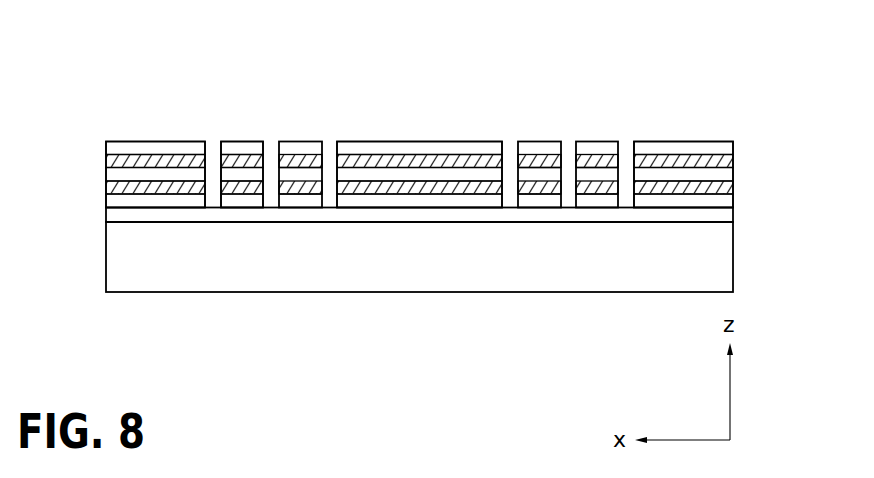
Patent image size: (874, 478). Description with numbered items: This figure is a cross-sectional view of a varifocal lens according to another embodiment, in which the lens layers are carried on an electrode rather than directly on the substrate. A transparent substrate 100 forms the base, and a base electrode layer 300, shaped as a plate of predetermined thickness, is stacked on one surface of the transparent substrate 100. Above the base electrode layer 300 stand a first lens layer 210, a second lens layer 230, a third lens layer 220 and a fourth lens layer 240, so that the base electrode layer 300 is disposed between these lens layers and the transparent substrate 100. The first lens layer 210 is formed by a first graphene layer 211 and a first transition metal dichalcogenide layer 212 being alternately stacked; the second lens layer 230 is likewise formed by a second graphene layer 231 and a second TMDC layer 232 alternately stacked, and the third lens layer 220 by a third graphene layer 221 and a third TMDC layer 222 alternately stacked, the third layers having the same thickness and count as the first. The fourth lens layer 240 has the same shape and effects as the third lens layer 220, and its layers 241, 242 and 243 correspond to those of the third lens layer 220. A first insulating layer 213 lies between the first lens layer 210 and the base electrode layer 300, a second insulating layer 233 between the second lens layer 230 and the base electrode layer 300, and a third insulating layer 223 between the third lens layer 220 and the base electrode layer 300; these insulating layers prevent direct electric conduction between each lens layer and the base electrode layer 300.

The transparent substrate 100 is at (713, 250).
The base electrode layer 300 is at (725, 215).
The first lens layer 210 is at (435, 117).
The first graphene layer 211 is at (380, 175).
The first transition metal dichalcogenide layer 212 is at (443, 185).
The first insulating layer 213 is at (480, 203).
The third lens layer 220 is at (671, 117).
The third graphene layer 221 is at (645, 174).
The third transition metal dichalcogenide layer 222 is at (688, 185).
The third insulating layer 223 is at (713, 203).
The second lens layer 230 is at (108, 117).
The second graphene layer 231 is at (118, 178).
The second transition metal dichalcogenide layer 232 is at (152, 188).
The second insulating layer 233 is at (195, 202).
The fourth lens layer 240 is at (267, 117).
The first layer of fourth stack 241 is at (228, 175).
The second layer of fourth stack 242 is at (255, 203).
The third layer of fourth stack 243 is at (208, 70).